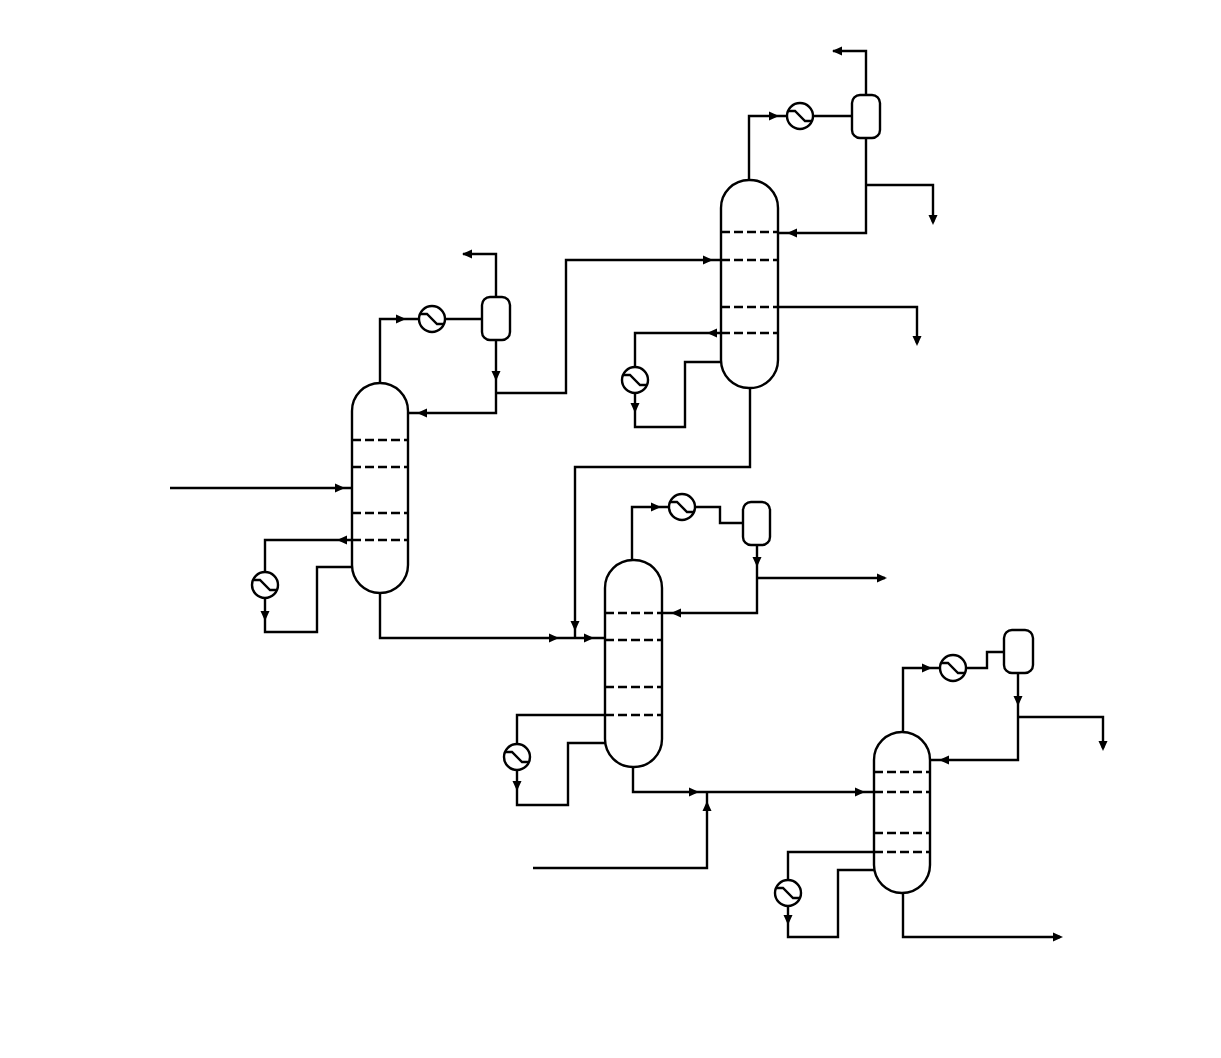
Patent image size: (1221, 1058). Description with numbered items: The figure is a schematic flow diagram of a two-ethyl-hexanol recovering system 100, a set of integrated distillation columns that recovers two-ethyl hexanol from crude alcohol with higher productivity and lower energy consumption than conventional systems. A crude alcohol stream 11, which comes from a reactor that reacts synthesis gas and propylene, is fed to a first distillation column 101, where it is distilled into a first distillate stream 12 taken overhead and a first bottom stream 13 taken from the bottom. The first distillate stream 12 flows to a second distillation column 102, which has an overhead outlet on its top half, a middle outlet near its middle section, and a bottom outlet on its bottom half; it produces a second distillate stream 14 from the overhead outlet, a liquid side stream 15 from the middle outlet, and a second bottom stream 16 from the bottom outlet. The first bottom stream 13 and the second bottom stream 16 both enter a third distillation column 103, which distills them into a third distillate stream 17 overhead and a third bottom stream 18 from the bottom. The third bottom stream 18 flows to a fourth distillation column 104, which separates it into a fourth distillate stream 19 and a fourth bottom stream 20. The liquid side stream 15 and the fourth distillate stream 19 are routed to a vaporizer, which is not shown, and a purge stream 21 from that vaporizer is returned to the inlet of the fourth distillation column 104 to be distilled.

The 2-EH recovering system 100 is at (318, 160).
The first distillation column 101 is at (409, 489).
The second distillation column 102 is at (775, 184).
The third distillation column 103 is at (663, 662).
The fourth distillation column 104 is at (931, 809).
The crude alcohol stream 11 is at (225, 488).
The first distillate stream 12 is at (566, 298).
The first bottom stream 13 is at (458, 640).
The second distillate stream 14 is at (915, 185).
The liquid side stream 15 is at (828, 307).
The second bottom stream 16 is at (752, 437).
The third distillate stream 17 is at (812, 578).
The third bottom stream 18 is at (776, 792).
The fourth distillate stream 19 is at (1062, 717).
The fourth bottom stream 20 is at (975, 937).
The purge stream 21 is at (600, 868).